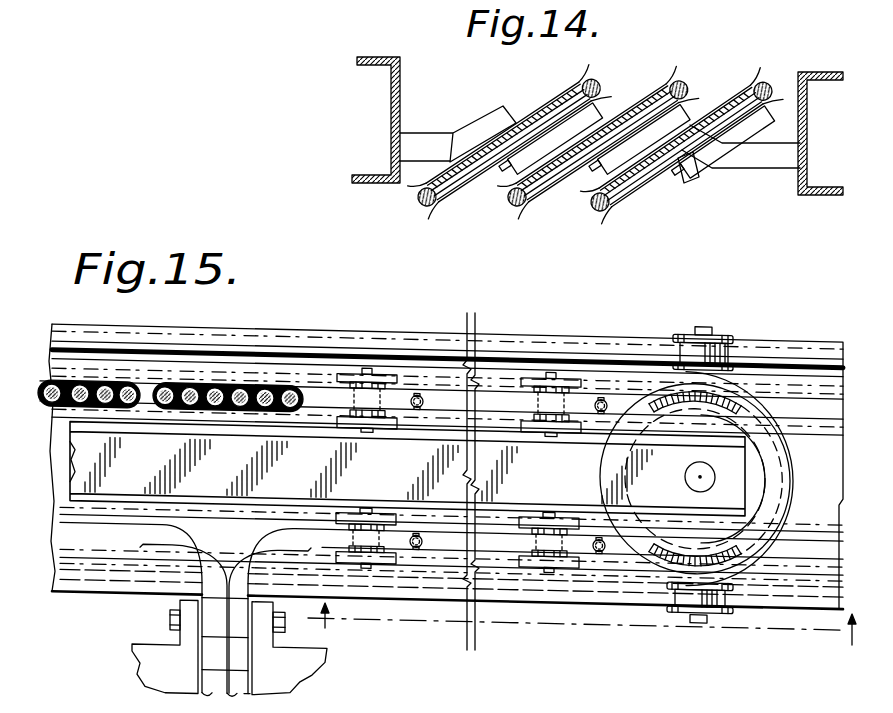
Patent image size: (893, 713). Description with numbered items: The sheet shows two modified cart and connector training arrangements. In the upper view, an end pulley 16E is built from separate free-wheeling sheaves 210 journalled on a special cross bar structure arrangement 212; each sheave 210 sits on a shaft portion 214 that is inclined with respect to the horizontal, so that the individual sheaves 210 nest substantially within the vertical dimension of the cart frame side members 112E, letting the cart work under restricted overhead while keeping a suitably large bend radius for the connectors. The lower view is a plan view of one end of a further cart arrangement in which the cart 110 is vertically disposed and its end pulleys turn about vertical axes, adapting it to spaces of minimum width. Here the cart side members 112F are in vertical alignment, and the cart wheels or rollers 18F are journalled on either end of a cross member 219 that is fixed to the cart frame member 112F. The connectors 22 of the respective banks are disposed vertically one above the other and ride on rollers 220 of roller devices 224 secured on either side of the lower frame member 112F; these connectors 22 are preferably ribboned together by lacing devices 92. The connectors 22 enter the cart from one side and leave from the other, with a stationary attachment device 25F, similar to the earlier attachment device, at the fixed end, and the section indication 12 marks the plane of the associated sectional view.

In FIG. 14, the cart frame side member 112E is at (391, 100).
In FIG. 14, the sheave 210 is at (549, 105).
In FIG. 14, the shaft portion 214 is at (497, 163).
In FIG. 14, the cross bar structure arrangement 212 is at (740, 178).
In FIG. 14, the end pulley 16E is at (505, 240).
In FIG. 15, the cart 110 is at (778, 323).
In FIG. 15, the roller device 224 is at (351, 372).
In FIG. 15, the roller 220 is at (357, 426).
In FIG. 15, the cross member 219 is at (770, 543).
In FIG. 15, the cart wheel or roller 18F is at (715, 623).
In FIG. 15, the stationary attachment device 25F is at (166, 661).
In FIG. 15, the section line 12 is at (588, 633).
In FIG. 15, the lacing device 92 is at (388, 703).
In FIG. 15, the connector 22 is at (433, 706).
In FIG. 15, the cart side member 112F is at (593, 705).